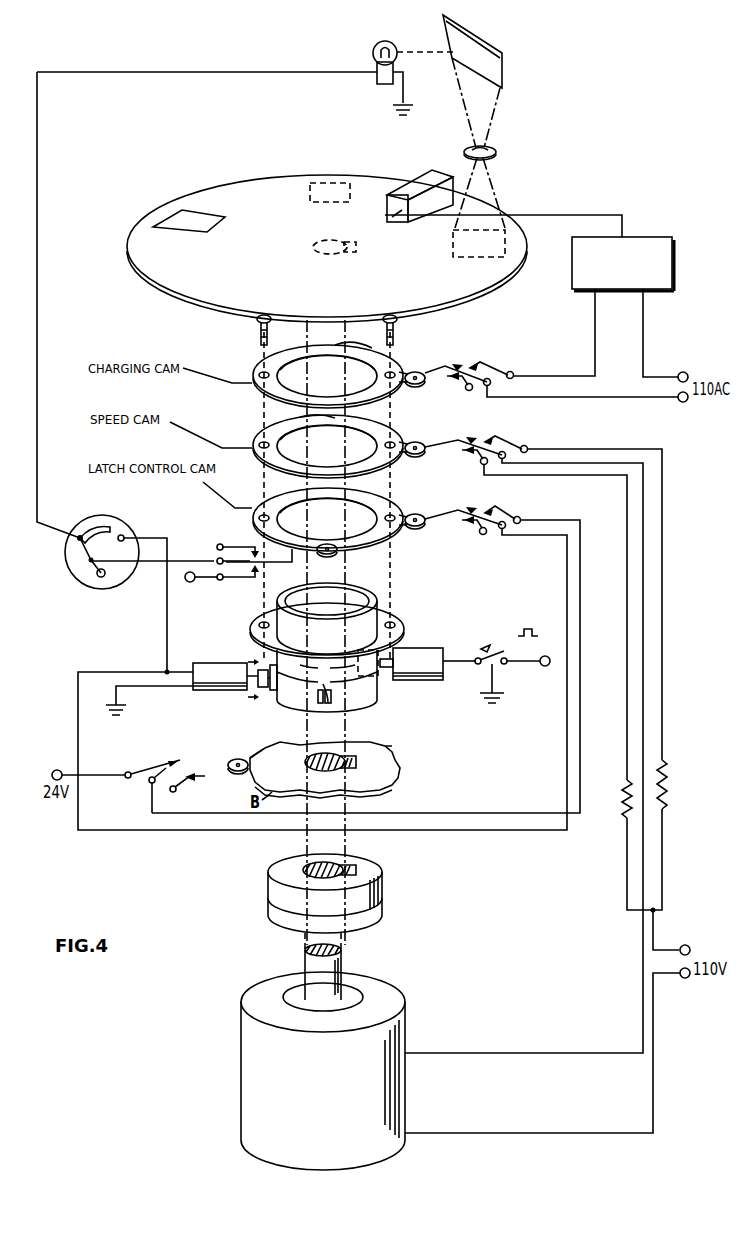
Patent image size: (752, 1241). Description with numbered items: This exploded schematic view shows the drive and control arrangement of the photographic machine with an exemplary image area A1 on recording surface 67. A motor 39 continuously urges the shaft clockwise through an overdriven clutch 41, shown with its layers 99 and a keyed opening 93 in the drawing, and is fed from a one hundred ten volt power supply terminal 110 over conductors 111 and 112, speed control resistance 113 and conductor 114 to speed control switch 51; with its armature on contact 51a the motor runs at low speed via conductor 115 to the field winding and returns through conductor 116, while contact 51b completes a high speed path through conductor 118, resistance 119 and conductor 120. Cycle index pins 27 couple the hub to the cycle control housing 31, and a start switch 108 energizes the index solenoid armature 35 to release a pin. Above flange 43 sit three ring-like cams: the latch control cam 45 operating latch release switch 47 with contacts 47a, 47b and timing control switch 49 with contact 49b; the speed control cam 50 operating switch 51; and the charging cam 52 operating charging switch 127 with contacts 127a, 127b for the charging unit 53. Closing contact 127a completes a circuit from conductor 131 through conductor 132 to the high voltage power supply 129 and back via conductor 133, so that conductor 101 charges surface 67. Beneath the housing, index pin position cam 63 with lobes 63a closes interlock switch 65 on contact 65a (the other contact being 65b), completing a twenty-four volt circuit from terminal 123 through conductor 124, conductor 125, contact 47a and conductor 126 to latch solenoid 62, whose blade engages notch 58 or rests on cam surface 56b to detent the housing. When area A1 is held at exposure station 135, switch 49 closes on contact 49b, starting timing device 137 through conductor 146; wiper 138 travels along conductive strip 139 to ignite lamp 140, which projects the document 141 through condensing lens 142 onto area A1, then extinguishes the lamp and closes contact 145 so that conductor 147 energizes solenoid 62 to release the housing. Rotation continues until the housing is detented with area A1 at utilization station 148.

The lamp 140 is at (374, 50).
The document 141 is at (478, 38).
The condensing lens 142 is at (488, 148).
The utilization station 148 is at (322, 183).
The charging unit 53 is at (428, 178).
The exposure station 135 is at (455, 257).
The conductor 101 is at (565, 215).
The high voltage D.C. power supply 129 is at (676, 260).
The conductor 132 is at (595, 342).
The conductor 133 is at (643, 352).
The conductor 131 is at (565, 397).
The charging switch 127 is at (478, 354).
The upper contact of charging switch 127a is at (506, 369).
The lower contact of charging switch 127b is at (466, 392).
The charging cam 52 is at (262, 362).
The speed control cam 50 is at (262, 437).
The speed control switch 51 is at (477, 431).
The upper contact of speed control switch 51a is at (514, 436).
The lower contact of speed control switch 51b is at (480, 466).
The latch control cam 45 is at (260, 506).
The latch release switch 47 is at (466, 511).
The upper contact of latch release switch 47a is at (492, 511).
The lower contact of latch release switch 47b is at (481, 538).
The recording surface 67 is at (248, 285).
The image area A1 is at (160, 229).
The conductive strip 139 is at (100, 526).
The contact 145 is at (124, 534).
The conductor 147 is at (160, 537).
The wiper 138 is at (88, 556).
The timing device 137 is at (74, 572).
The conductor 146 is at (156, 564).
The timing control switch 49 is at (212, 548).
The lower contact of timing control switch 49b is at (258, 573).
The flange 43 is at (257, 621).
The latch solenoid 62 is at (226, 663).
The index solenoid armature 35 is at (412, 648).
The start switch 108 is at (488, 653).
The cycle index pin 27 is at (380, 684).
The cycle control housing 31 is at (392, 704).
The cam surface 56b is at (366, 686).
The notch 58 is at (330, 705).
The index pin position cam 63 is at (300, 782).
The lobe 63a is at (253, 758).
The keyed hole 93 is at (363, 765).
The interlock switch 65 is at (178, 758).
The upper contact of interlock switch 65a is at (136, 780).
The lower contact of interlock switch 65b is at (186, 786).
The terminal 123 is at (54, 770).
The conductor 124 is at (92, 775).
The conductor 125 is at (583, 577).
The conductor 126 is at (567, 605).
The conductor 114 is at (664, 577).
The conductor 115 is at (644, 608).
The conductor 120 is at (628, 645).
The resistance 119 is at (623, 798).
The speed control resistance 113 is at (667, 791).
The conductor 118 is at (623, 880).
The conductor 112 is at (664, 880).
The conductor 111 is at (657, 945).
The power supply terminal 110 is at (690, 949).
The conductor 116 is at (472, 1133).
The overdriven clutch 41 is at (258, 891).
The flywheel layer 99 is at (383, 886).
The motor 39 is at (336, 1100).